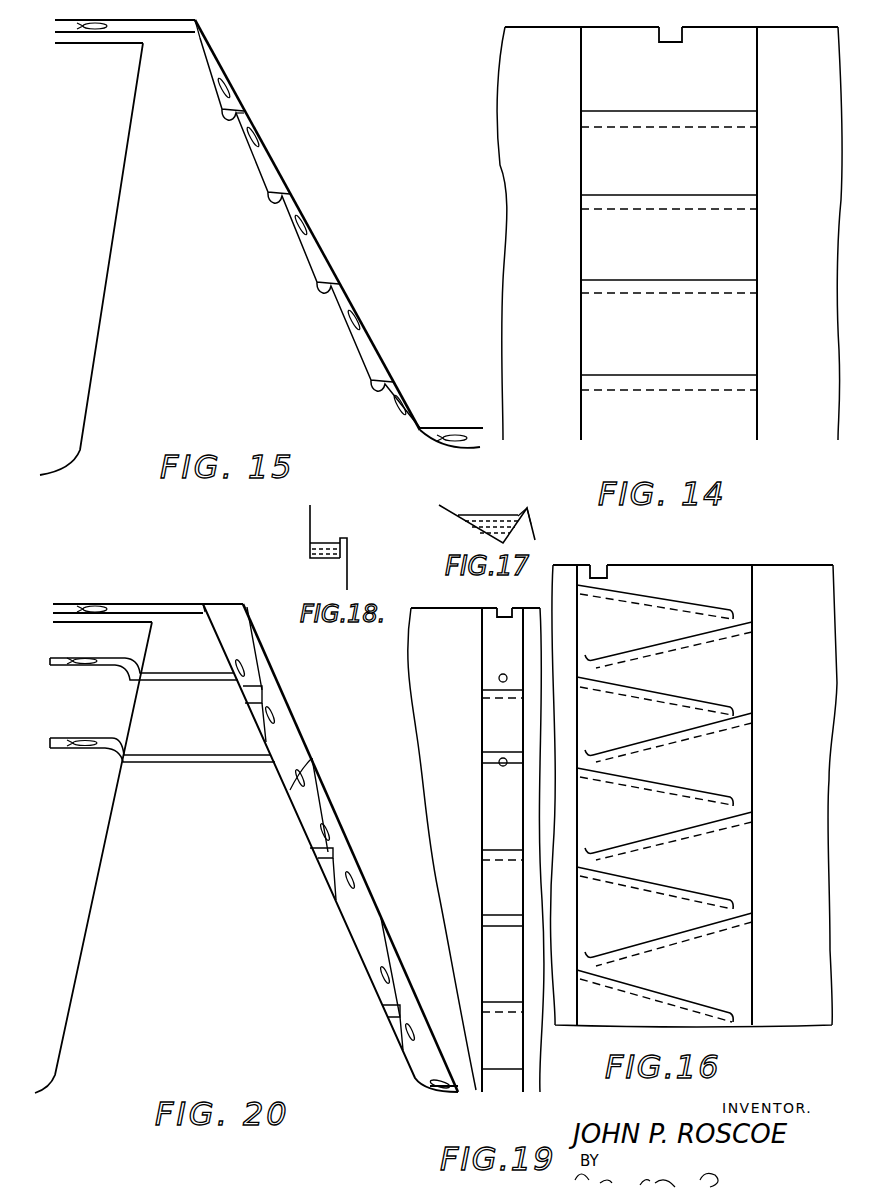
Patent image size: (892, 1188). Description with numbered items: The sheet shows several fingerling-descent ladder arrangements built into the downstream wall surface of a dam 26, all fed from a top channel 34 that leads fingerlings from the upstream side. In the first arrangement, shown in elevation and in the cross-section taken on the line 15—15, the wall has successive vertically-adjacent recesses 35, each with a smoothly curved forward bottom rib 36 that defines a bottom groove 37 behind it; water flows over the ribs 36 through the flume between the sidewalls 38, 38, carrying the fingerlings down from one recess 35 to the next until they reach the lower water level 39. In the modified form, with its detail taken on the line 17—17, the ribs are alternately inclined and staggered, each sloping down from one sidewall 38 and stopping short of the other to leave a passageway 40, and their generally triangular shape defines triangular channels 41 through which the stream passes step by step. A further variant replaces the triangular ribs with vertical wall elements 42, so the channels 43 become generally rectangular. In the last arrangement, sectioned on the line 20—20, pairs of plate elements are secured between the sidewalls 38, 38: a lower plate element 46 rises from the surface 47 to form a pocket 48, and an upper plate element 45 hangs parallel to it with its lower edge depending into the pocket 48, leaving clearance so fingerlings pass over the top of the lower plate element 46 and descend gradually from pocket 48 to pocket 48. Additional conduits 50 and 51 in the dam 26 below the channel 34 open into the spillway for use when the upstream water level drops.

In FIG. 14, the section line 15— 15 is at (700, 462).
In FIG. 16, the section line 17— 17 is at (665, 675).
In FIG. 19, the section line 20— 20 is at (540, 1125).
In FIG. 15, the dam 26 is at (140, 190).
In FIG. 14, the dam 26 is at (537, 53).
In FIG. 20, the dam 26 is at (112, 900).
In FIG. 19, the dam 26 is at (476, 850).
In FIG. 16, the dam 26 is at (823, 607).
In FIG. 15, the channel 34 is at (175, 28).
In FIG. 14, the channel 34 is at (668, 44).
In FIG. 20, the channel 34 is at (172, 614).
In FIG. 19, the channel 34 is at (505, 612).
In FIG. 16, the channel 34 is at (598, 565).
In FIG. 15, the recesses 35 is at (363, 333).
In FIG. 14, the recesses 35 is at (750, 143).
In FIG. 15, the bottom rib 36 is at (242, 112).
In FIG. 14, the bottom rib 36 is at (693, 147).
In FIG. 17, the bottom rib 36 is at (532, 513).
In FIG. 16, the bottom rib 36 is at (645, 598).
In FIG. 15, the bottom groove 37 is at (230, 116).
In FIG. 14, the sidewalls 38 is at (582, 85).
In FIG. 19, the sidewalls 38 is at (527, 638).
In FIG. 16, the sidewalls 38 is at (750, 592).
In FIG. 15, the lower water level 39 is at (460, 430).
In FIG. 16, the passageway 40 is at (752, 580).
In FIG. 17, the triangular channels 41 is at (493, 537).
In FIG. 16, the triangular channels 41 is at (622, 600).
In FIG. 18, the vertical wall elements 42 is at (347, 548).
In FIG. 18, the channels 43 is at (327, 553).
In FIG. 20, the upper plate element 45 is at (247, 630).
In FIG. 19, the upper plate element 45 is at (496, 628).
In FIG. 20, the lower plate element 46 is at (258, 692).
In FIG. 19, the lower plate element 46 is at (497, 712).
In FIG. 20, the surface 47 is at (290, 790).
In FIG. 20, the pocket 48 is at (255, 700).
In FIG. 20, the conduit 50 is at (165, 682).
In FIG. 20, the conduit 51 is at (157, 765).